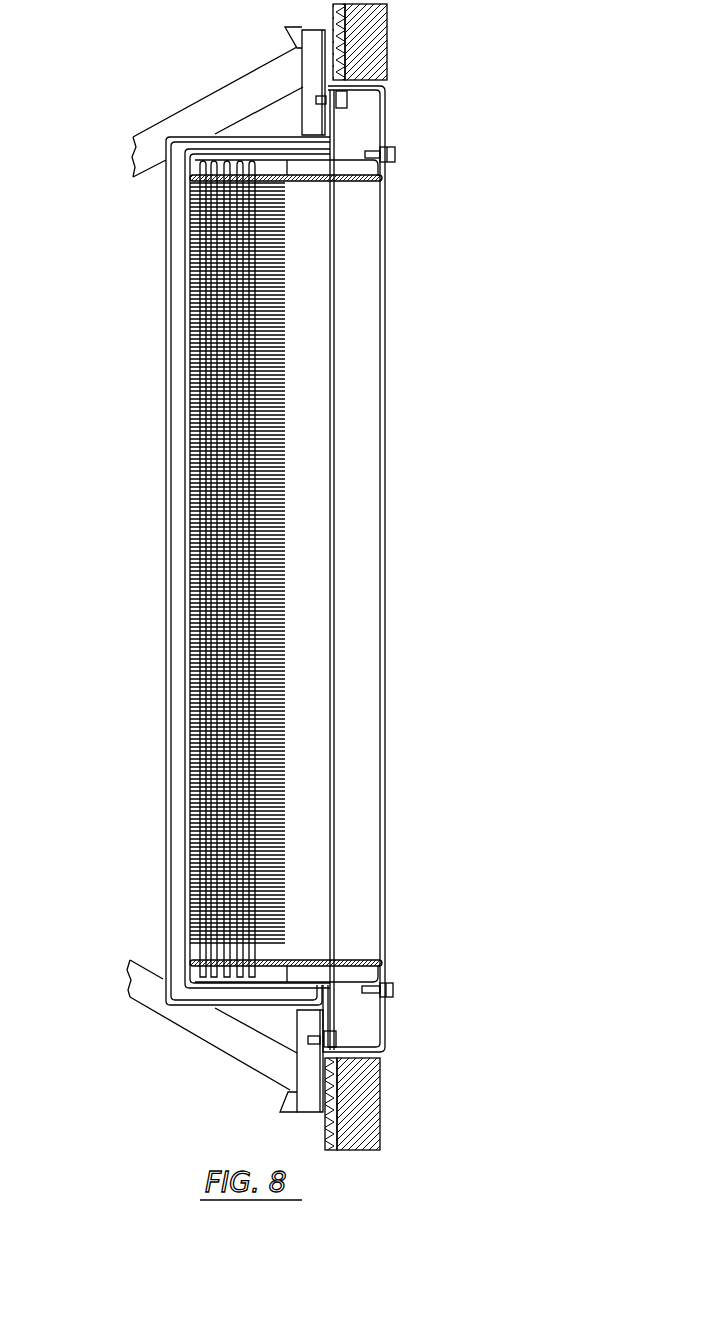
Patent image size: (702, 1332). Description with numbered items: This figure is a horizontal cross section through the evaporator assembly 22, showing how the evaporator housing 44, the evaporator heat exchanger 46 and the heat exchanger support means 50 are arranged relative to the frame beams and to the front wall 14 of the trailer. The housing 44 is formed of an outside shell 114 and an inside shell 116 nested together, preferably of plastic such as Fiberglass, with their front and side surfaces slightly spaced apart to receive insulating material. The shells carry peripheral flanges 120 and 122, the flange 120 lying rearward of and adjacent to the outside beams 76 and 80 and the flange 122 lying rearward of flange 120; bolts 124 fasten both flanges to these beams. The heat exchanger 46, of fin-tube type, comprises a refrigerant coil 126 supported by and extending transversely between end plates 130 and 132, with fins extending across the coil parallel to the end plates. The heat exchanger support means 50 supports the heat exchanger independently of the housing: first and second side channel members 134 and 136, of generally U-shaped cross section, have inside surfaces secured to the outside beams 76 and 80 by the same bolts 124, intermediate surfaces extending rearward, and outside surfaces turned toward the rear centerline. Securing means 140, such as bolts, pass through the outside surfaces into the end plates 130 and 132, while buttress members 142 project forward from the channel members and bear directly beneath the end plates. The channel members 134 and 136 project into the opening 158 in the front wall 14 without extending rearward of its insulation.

The front wall 14 is at (333, 25).
The evaporator assembly 22 is at (120, 497).
The evaporator housing 44 is at (158, 112).
The evaporator heat exchanger 46 is at (318, 421).
The heat exchanger support means 50 is at (436, 135).
The outside beam 76 is at (362, 62).
The outside beam 80 is at (381, 1126).
The outside shell 114 is at (167, 416).
The inside shell 116 is at (190, 393).
The peripheral flange 120 is at (327, 118).
The peripheral flange 122 is at (337, 142).
The bolts 124 is at (385, 83).
The refrigerant coil 126 is at (222, 720).
The end plate 130 is at (192, 207).
The end plate 132 is at (190, 932).
The first side channel member 134 is at (383, 1023).
The second side channel member 136 is at (385, 108).
The securing means 140 is at (396, 154).
The buttress members 142 is at (318, 182).
The opening 158 is at (300, 1037).